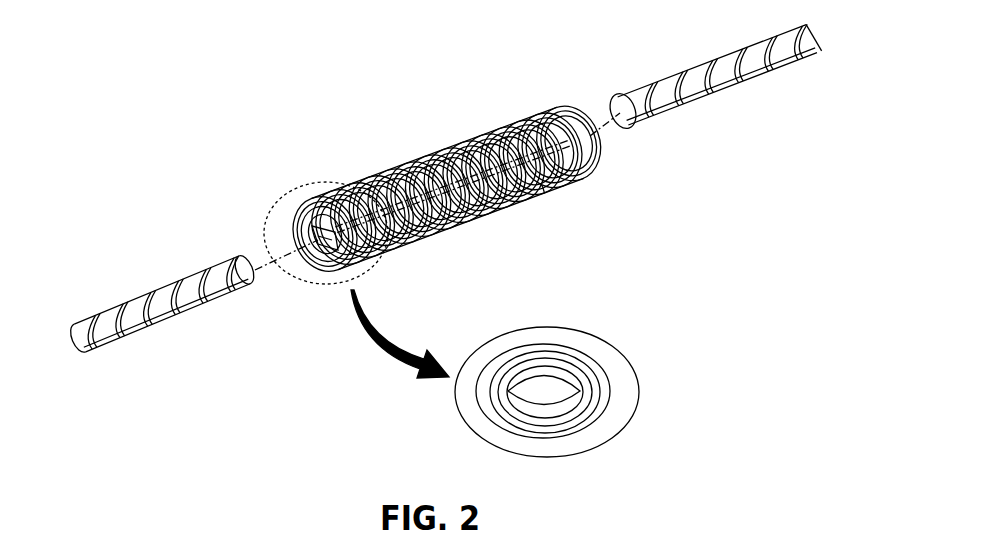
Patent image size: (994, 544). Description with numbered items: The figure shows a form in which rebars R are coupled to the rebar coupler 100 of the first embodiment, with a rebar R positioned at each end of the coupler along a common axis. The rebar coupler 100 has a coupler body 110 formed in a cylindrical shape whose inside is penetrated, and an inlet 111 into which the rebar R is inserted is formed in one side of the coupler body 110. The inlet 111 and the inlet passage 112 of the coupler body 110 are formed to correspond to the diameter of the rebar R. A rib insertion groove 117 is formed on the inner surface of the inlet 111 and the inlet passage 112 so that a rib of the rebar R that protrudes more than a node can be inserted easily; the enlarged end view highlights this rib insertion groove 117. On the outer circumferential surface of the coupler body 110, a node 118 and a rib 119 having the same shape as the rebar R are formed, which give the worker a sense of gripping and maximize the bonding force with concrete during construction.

The rebar coupler 100 is at (415, 122).
The coupler body 110 is at (523, 114).
The inlet 111 is at (313, 265).
The inlet passage 112 is at (374, 270).
The rib insertion groove 117 is at (300, 224).
The node 118 is at (528, 192).
The rib 119 is at (594, 166).
The rebar R is at (141, 269).